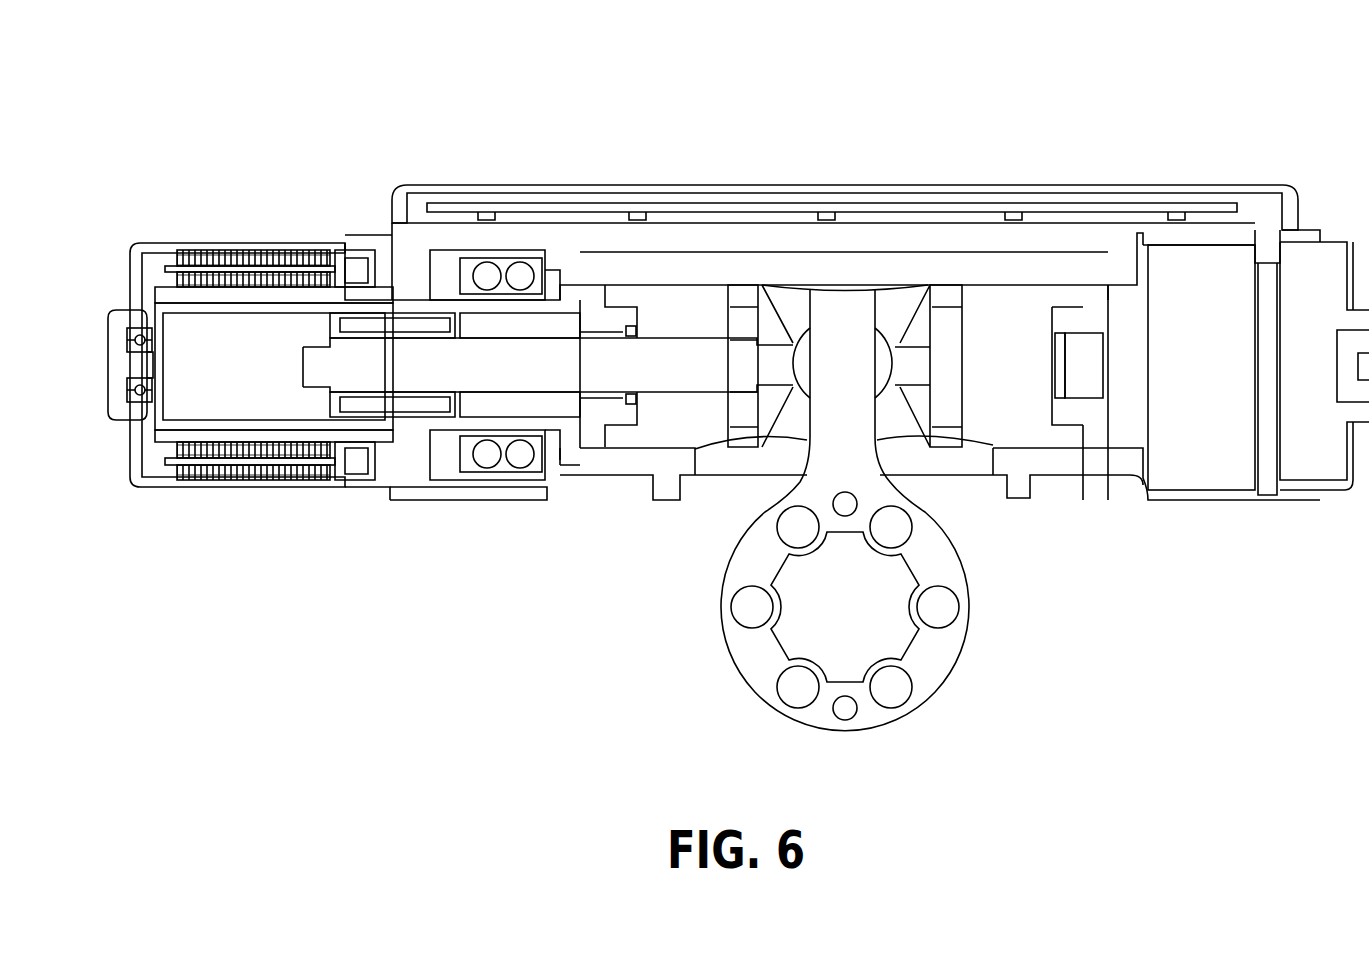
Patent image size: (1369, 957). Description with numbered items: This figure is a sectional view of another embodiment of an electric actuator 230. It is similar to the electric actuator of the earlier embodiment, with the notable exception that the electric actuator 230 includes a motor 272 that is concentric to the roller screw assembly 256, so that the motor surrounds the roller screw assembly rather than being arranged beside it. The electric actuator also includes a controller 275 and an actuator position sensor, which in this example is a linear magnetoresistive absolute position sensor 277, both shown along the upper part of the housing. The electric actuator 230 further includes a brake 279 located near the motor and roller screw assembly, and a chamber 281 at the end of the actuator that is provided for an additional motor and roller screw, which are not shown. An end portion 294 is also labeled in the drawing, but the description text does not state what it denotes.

The electric actuator 230 is at (412, 143).
The controller 275 is at (700, 208).
The linear magnetoresistive absolute position sensor 277 is at (487, 211).
The chamber 281 is at (1293, 288).
The end cap 294 is at (108, 400).
The motor 272 is at (230, 452).
The roller screw assembly 256 is at (385, 418).
The brake 279 is at (572, 460).